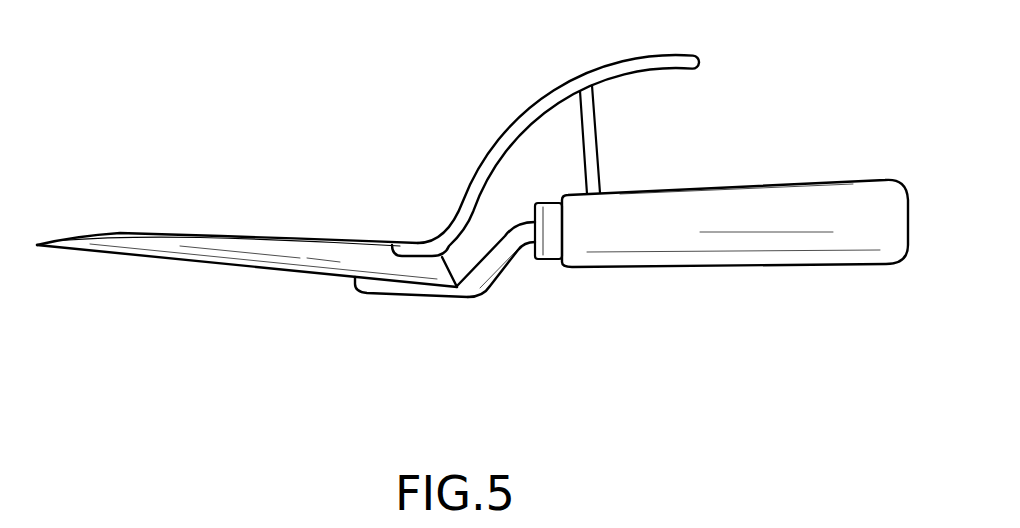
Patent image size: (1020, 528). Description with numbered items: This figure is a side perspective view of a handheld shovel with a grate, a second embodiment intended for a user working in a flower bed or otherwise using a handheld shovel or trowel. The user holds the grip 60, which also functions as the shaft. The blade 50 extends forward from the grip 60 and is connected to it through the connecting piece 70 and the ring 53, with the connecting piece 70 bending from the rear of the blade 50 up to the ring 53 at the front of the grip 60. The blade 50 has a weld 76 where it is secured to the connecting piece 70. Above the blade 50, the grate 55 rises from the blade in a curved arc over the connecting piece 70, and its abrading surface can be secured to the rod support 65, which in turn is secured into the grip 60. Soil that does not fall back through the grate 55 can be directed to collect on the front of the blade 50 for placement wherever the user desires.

The blade 50 is at (105, 235).
The grate 55 is at (485, 88).
The grip 60 is at (852, 180).
The rod support 65 is at (593, 146).
The connecting piece 70 is at (502, 275).
The weld 76 is at (392, 293).
The ring 53 is at (550, 259).